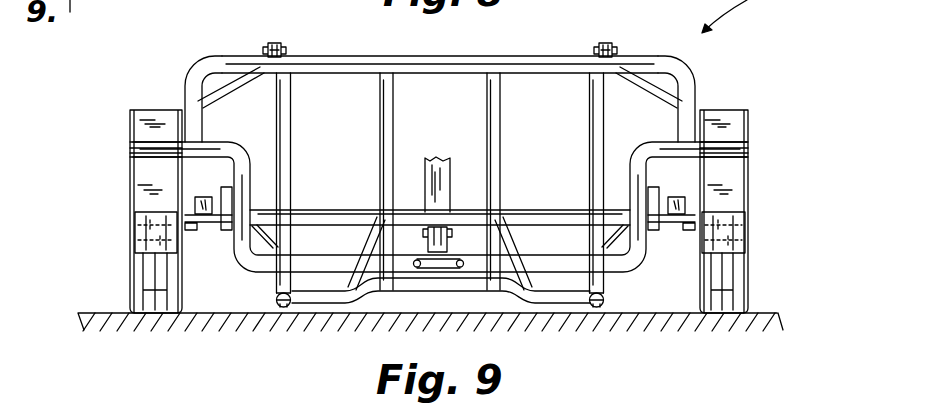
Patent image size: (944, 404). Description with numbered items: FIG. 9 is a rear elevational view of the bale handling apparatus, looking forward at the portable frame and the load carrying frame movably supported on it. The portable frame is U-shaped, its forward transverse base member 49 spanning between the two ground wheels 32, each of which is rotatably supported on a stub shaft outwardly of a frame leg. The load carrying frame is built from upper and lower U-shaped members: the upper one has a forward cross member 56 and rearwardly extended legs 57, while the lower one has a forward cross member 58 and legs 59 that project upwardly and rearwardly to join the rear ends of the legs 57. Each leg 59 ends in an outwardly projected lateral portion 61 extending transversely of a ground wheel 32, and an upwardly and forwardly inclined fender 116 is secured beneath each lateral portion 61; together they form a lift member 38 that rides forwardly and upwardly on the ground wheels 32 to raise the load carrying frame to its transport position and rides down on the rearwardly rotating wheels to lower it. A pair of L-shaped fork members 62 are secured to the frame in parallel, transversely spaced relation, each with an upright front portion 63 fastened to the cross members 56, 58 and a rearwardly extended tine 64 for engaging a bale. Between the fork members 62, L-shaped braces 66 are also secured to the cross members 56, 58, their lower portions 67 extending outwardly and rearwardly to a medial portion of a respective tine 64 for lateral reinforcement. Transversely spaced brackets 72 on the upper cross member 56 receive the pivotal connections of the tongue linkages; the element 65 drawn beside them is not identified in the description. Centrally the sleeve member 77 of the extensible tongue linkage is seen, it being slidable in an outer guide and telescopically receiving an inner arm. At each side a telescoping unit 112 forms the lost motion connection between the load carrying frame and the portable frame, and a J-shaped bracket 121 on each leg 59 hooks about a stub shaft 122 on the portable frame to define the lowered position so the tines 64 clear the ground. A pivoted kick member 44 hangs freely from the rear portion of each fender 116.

The ground wheels 32 is at (140, 283).
The lift members 38 is at (118, 127).
The pivoted kick member 44 is at (147, 246).
The forward transverse base member 49 is at (535, 212).
The upper cross member 56 is at (548, 62).
The legs of upper frame member 57 is at (189, 97).
The lower cross member 58 is at (563, 271).
The legs of lower frame member 59 is at (248, 168).
The lateral portions 61 is at (147, 141).
The L-shaped fork members 62 is at (270, 307).
The upright front portion 63 is at (291, 121).
The tine portion 64 is at (285, 309).
The bracket 65 is at (275, 43).
The L-shaped braces 66 is at (380, 144).
The lower portions of braces 67 is at (352, 295).
The brackets 72 is at (286, 45).
The central sleeve member 77 is at (447, 172).
The telescoping units 112 is at (203, 197).
The fender 116 is at (142, 118).
The J-shaped bracket 121 is at (232, 232).
The stub shafts 122 is at (217, 225).